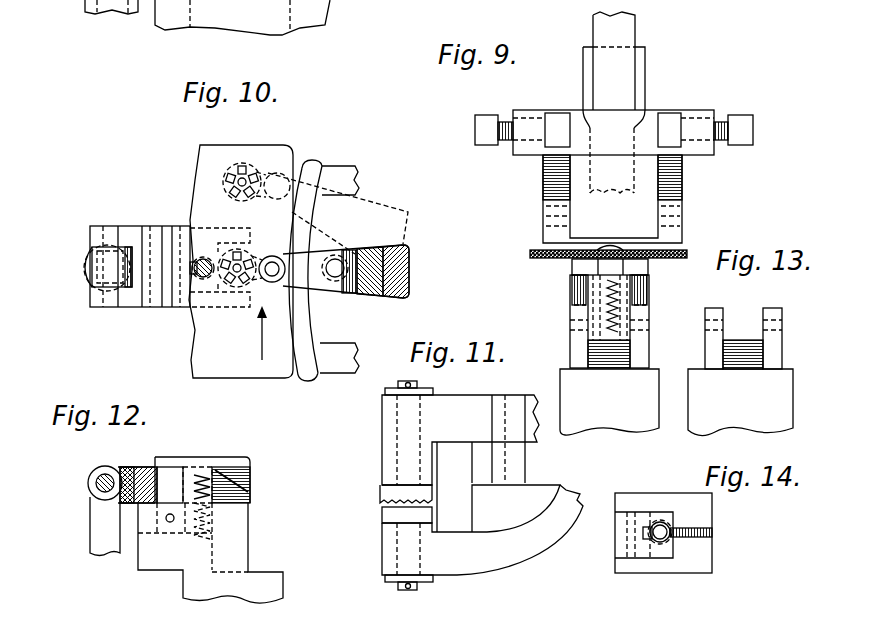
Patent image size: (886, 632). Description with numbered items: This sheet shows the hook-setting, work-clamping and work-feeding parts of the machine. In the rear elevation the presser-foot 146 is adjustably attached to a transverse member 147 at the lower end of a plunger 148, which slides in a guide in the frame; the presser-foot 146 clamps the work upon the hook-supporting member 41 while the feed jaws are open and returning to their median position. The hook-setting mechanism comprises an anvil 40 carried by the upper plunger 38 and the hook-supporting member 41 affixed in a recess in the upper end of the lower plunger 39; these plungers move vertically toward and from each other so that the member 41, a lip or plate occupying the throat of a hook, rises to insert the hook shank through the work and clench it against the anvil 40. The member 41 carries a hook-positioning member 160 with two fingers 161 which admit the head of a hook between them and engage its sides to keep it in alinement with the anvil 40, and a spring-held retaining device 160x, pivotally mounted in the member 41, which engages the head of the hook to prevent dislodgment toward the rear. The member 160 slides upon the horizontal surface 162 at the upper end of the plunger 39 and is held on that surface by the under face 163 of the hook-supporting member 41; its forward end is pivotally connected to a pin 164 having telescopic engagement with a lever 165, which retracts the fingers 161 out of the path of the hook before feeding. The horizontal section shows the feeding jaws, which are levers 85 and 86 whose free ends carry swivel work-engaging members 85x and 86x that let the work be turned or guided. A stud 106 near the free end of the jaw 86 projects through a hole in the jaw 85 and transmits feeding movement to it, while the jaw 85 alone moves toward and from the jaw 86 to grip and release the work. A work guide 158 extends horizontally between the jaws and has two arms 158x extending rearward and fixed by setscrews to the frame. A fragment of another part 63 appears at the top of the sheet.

In FIG. 9, the plunger 148 is at (628, 28).
In FIG. 9, the plunger 38 is at (641, 70).
In FIG. 9, the transverse member 147 is at (695, 110).
In FIG. 9, the anvil 40 is at (612, 160).
In FIG. 9, the hook-supporting member 41 is at (584, 262).
In FIG. 12, the hook-supporting member 41 is at (233, 457).
In FIG. 14, the hook-supporting member 41 is at (712, 563).
In FIG. 9, the presser-foot 146 is at (670, 243).
In FIG. 9, the under face 163 is at (636, 281).
In FIG. 12, the under face 163 is at (168, 463).
In FIG. 14, the under face 163 is at (663, 505).
In FIG. 9, the fingers 161 is at (570, 287).
In FIG. 10, the fingers 161 is at (248, 232).
In FIG. 9, the retaining device 160x is at (613, 293).
In FIG. 12, the retaining device 160x is at (244, 492).
In FIG. 14, the retaining device 160x is at (700, 530).
In FIG. 9, the horizontal surface 162 is at (578, 302).
In FIG. 13, the horizontal surface 162 is at (774, 308).
In FIG. 12, the horizontal surface 162 is at (166, 500).
In FIG. 9, the plunger 39 is at (609, 402).
In FIG. 13, the plunger 39 is at (740, 402).
In FIG. 12, the plunger 39 is at (183, 586).
In FIG. 10, the hook-positioning member 160 is at (148, 226).
In FIG. 12, the hook-positioning member 160 is at (118, 502).
In FIG. 10, the pin 164 is at (108, 260).
In FIG. 12, the pin 164 is at (102, 541).
In FIG. 10, the lever 165 is at (83, 273).
In FIG. 10, the work guide 158 is at (314, 164).
In FIG. 10, the arms 158x is at (358, 172).
In FIG. 10, the feed jaw 86 is at (409, 279).
In FIG. 11, the feed jaw 86 is at (482, 537).
In FIG. 10, the feed jaw 85 is at (370, 299).
In FIG. 11, the feed jaw 85 is at (416, 444).
In FIG. 10, the stud 106 is at (334, 281).
In FIG. 11, the stud 106 is at (502, 463).
In FIG. 11, the swivel work-engaging member 85x is at (382, 490).
In FIG. 11, the swivel work-engaging member 86x is at (383, 515).
In FIG. 10, the member 63 is at (244, 17).